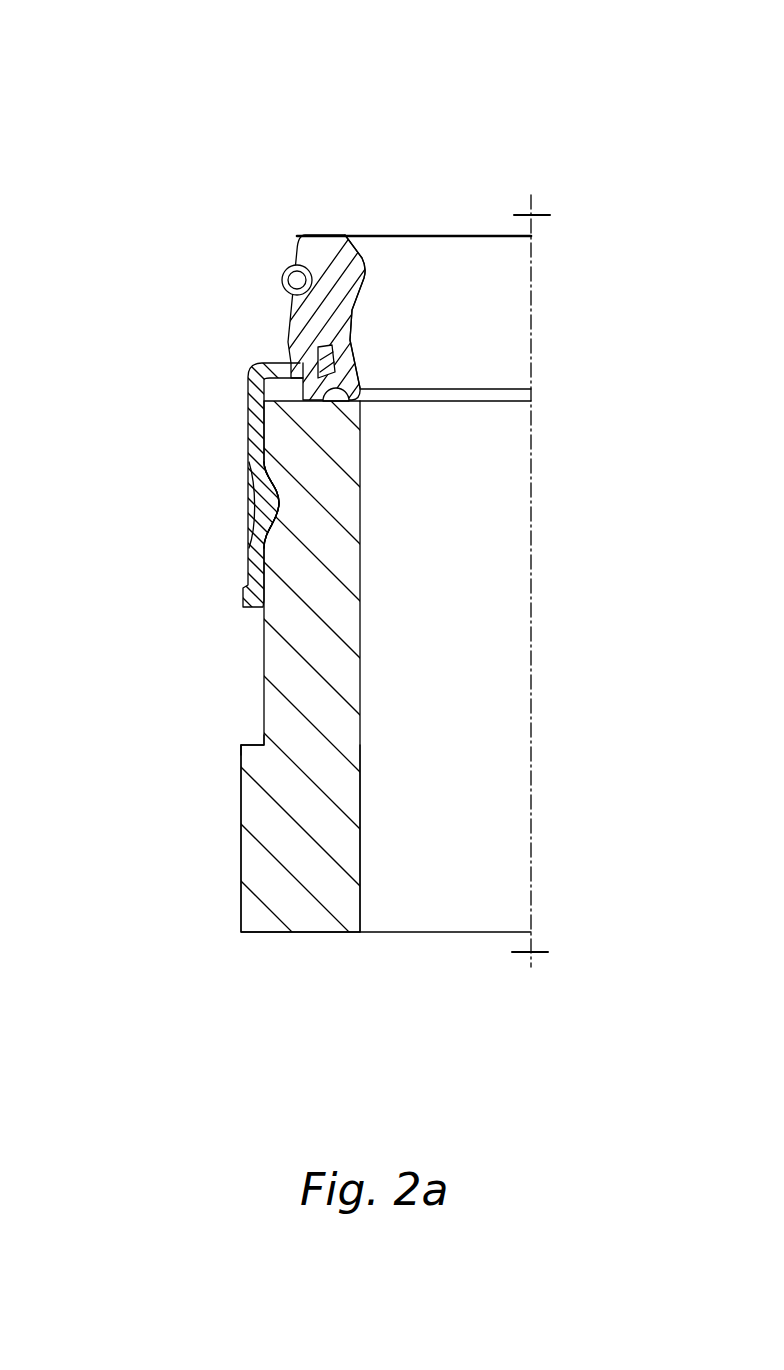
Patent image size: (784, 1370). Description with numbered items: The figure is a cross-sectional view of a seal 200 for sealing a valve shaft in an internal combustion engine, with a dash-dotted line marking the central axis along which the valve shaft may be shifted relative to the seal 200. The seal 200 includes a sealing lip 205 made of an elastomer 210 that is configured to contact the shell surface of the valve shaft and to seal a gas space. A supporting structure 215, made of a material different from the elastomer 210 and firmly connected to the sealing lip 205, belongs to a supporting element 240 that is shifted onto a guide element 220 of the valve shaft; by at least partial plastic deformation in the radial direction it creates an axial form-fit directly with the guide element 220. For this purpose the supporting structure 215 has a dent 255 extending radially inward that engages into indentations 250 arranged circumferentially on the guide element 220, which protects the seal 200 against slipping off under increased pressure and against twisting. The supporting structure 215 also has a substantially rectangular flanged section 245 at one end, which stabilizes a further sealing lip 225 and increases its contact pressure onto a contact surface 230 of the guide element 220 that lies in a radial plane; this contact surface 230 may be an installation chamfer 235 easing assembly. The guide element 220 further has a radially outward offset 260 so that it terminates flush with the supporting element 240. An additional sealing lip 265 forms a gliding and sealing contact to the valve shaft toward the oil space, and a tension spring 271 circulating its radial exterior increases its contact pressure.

The seal 200 is at (88, 102).
The sealing lip 205 is at (363, 389).
The elastomer 210 is at (300, 333).
The supporting structure 215 is at (248, 418).
The guide element 220 is at (240, 838).
The further sealing lip 225 is at (314, 405).
The contact surface 230 is at (363, 389).
The installation chamfer 235 is at (280, 505).
The supporting element 240 is at (257, 508).
The section 245 is at (283, 364).
The indentations 250 is at (282, 507).
The dent 255 is at (250, 508).
The offset 260 is at (247, 742).
The additional sealing lip 265 is at (358, 236).
The tension spring 271 is at (283, 269).